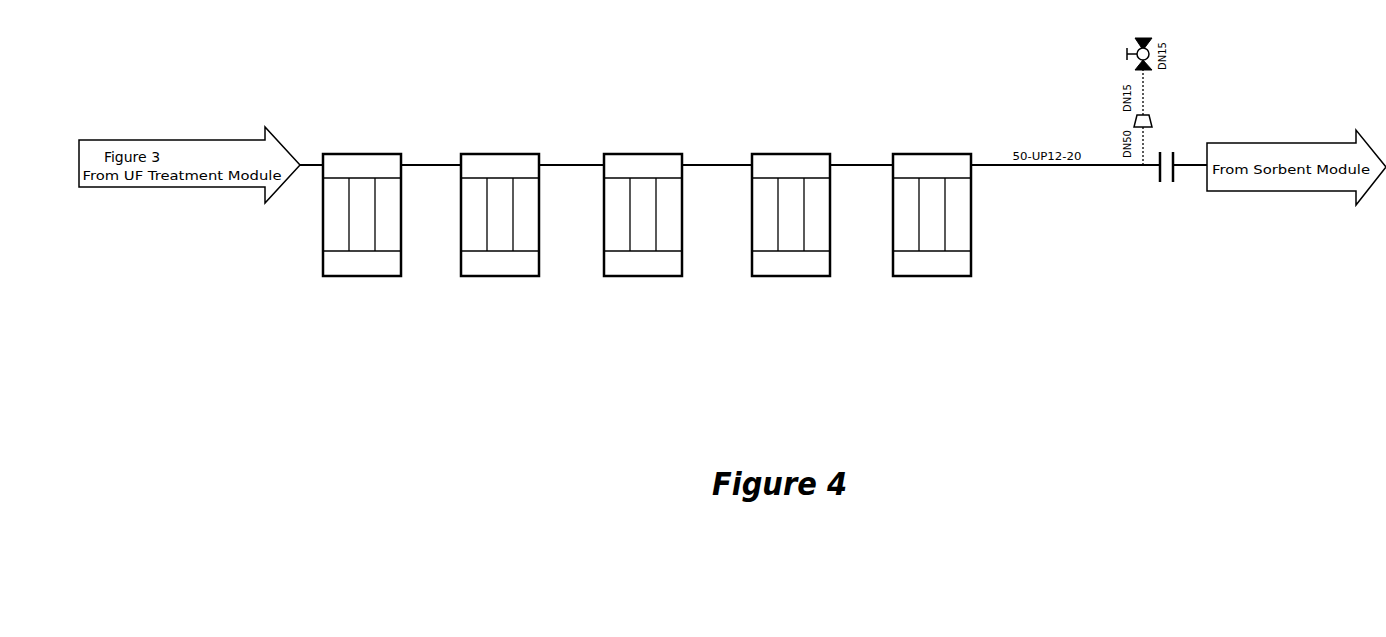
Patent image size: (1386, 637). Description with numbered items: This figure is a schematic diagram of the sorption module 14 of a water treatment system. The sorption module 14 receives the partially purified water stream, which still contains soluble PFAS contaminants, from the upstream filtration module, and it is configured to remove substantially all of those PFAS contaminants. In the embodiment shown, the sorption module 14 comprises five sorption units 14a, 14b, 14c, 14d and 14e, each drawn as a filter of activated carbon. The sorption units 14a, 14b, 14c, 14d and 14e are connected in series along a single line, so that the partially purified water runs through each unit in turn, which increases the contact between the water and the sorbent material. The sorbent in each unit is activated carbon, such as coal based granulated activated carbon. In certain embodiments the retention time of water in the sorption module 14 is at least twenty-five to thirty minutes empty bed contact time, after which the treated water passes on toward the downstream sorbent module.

The sorption module 14 is at (451, 364).
The sorption unit 14a is at (368, 153).
The sorption unit 14b is at (500, 153).
The sorption unit 14c is at (677, 153).
The sorption unit 14d is at (798, 153).
The sorption unit 14e is at (936, 153).